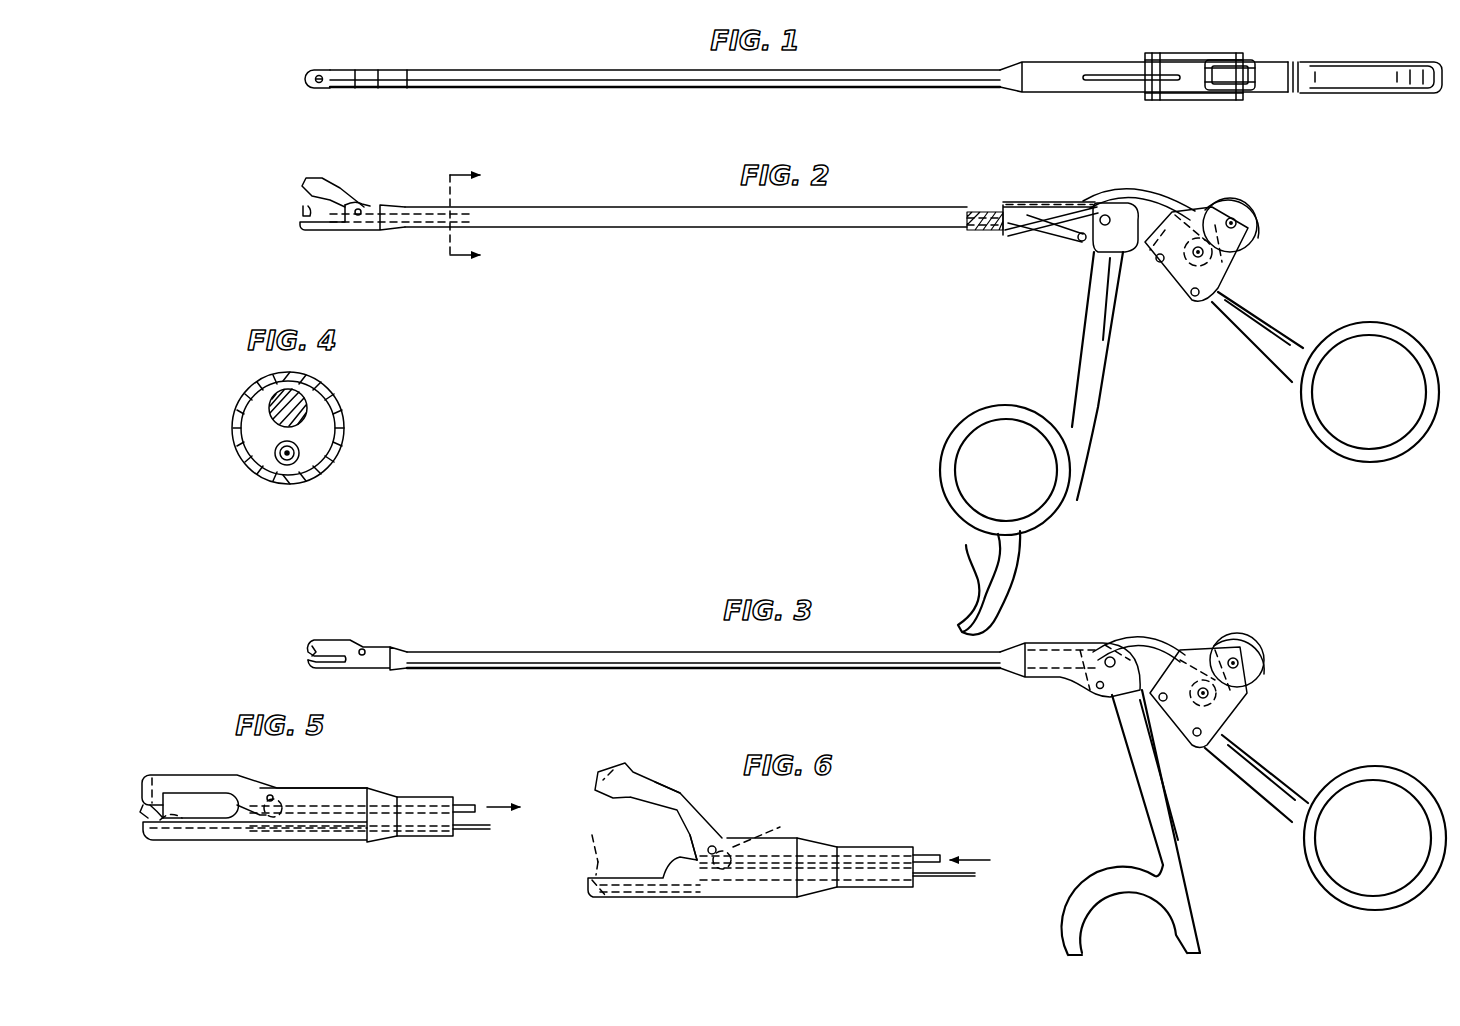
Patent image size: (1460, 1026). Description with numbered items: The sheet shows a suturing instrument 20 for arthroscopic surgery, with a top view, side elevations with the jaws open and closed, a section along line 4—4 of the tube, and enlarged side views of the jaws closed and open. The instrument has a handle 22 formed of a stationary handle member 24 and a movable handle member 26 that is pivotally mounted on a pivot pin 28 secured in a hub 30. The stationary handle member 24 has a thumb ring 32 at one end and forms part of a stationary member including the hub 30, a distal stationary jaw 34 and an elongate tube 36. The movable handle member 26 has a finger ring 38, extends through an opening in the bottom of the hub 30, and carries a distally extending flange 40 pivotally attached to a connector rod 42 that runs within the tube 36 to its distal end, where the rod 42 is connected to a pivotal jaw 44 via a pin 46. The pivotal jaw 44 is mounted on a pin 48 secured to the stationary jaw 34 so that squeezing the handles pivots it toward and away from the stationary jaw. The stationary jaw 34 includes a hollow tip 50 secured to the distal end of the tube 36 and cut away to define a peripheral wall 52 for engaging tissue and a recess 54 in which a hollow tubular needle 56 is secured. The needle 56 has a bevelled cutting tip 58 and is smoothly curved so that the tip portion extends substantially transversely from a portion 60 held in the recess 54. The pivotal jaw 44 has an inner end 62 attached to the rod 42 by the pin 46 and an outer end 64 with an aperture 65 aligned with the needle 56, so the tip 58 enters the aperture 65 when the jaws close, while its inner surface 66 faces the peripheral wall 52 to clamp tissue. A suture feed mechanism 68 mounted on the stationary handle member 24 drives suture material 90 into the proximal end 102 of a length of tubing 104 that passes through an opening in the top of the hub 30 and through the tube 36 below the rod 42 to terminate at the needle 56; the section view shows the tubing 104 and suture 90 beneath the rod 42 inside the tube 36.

In FIG. 2, the section line 4— 4 is at (487, 220).
In FIG. 1, the suturing instrument 20 is at (905, 52).
In FIG. 2, the suturing instrument 20 is at (683, 204).
In FIG. 1, the handle 22 is at (1282, 58).
In FIG. 2, the handle 22 is at (1058, 350).
In FIG. 1, the stationary handle member 24 is at (1270, 94).
In FIG. 2, the stationary handle member 24 is at (1275, 380).
In FIG. 3, the stationary handle member 24 is at (1258, 775).
In FIG. 2, the movable handle member 26 is at (1098, 406).
In FIG. 3, the movable handle member 26 is at (1150, 820).
In FIG. 2, the pivot pin 28 is at (1070, 200).
In FIG. 1, the hub 30 is at (1062, 60).
In FIG. 2, the hub 30 is at (1030, 196).
In FIG. 1, the thumb ring 32 is at (1398, 94).
In FIG. 2, the thumb ring 32 is at (1382, 450).
In FIG. 3, the thumb ring 32 is at (1375, 838).
In FIG. 2, the stationary jaw 34 is at (328, 234).
In FIG. 3, the stationary jaw 34 is at (338, 676).
In FIG. 5, the stationary jaw 34 is at (270, 815).
In FIG. 6, the stationary jaw 34 is at (640, 902).
In FIG. 1, the elongate tube 36 is at (590, 66).
In FIG. 2, the elongate tube 36 is at (680, 228).
In FIG. 4, the elongate tube 36 is at (345, 425).
In FIG. 3, the elongate tube 36 is at (612, 650).
In FIG. 5, the elongate tube 36 is at (420, 840).
In FIG. 6, the elongate tube 36 is at (875, 867).
In FIG. 2, the finger ring 38 is at (953, 474).
In FIG. 3, the finger ring 38 is at (1131, 910).
In FIG. 2, the flange 40 is at (1080, 242).
In FIG. 2, the connector rod 42 is at (430, 212).
In FIG. 4, the connector rod 42 is at (268, 410).
In FIG. 5, the connector rod 42 is at (468, 802).
In FIG. 6, the connector rod 42 is at (932, 852).
In FIG. 1, the pivotal jaw 44 is at (332, 66).
In FIG. 2, the pivotal jaw 44 is at (345, 178).
In FIG. 3, the pivotal jaw 44 is at (342, 636).
In FIG. 5, the pivotal jaw 44 is at (202, 770).
In FIG. 6, the pivotal jaw 44 is at (604, 770).
In FIG. 2, the pin 46 is at (370, 210).
In FIG. 5, the pin 46 is at (290, 806).
In FIG. 2, the pin 48 is at (360, 208).
In FIG. 5, the pin 48 is at (276, 796).
In FIG. 6, the pin 48 is at (717, 848).
In FIG. 5, the hollow tip 50 is at (370, 786).
In FIG. 6, the hollow tip 50 is at (800, 898).
In FIG. 5, the peripheral wall 52 is at (185, 820).
In FIG. 6, the peripheral wall 52 is at (655, 878).
In FIG. 6, the recess 54 is at (592, 892).
In FIG. 2, the hollow tubular needle 56 is at (307, 211).
In FIG. 3, the hollow tubular needle 56 is at (306, 657).
In FIG. 5, the hollow tubular needle 56 is at (142, 815).
In FIG. 6, the hollow tubular needle 56 is at (593, 865).
In FIG. 6, the bevelled cutting tip 58 is at (584, 834).
In FIG. 5, the needle portion 60 is at (210, 840).
In FIG. 6, the inner end 62 is at (782, 826).
In FIG. 6, the outer end 64 is at (672, 792).
In FIG. 1, the aperture 65 is at (320, 82).
In FIG. 5, the aperture 65 is at (156, 770).
In FIG. 6, the aperture 65 is at (622, 775).
In FIG. 5, the inner surface 66 is at (150, 805).
In FIG. 6, the inner surface 66 is at (670, 810).
In FIG. 2, the suture feed mechanism 68 is at (1258, 212).
In FIG. 3, the suture feed mechanism 68 is at (1245, 716).
In FIG. 4, the suture material 90 is at (292, 454).
In FIG. 5, the suture material 90 is at (482, 828).
In FIG. 6, the suture material 90 is at (960, 878).
In FIG. 2, the proximal end of tubing 102 is at (1205, 210).
In FIG. 3, the proximal end of tubing 102 is at (1237, 660).
In FIG. 2, the tubing 104 is at (1155, 192).
In FIG. 4, the tubing 104 is at (275, 454).
In FIG. 3, the tubing 104 is at (1139, 649).
In FIG. 5, the tubing 104 is at (462, 835).